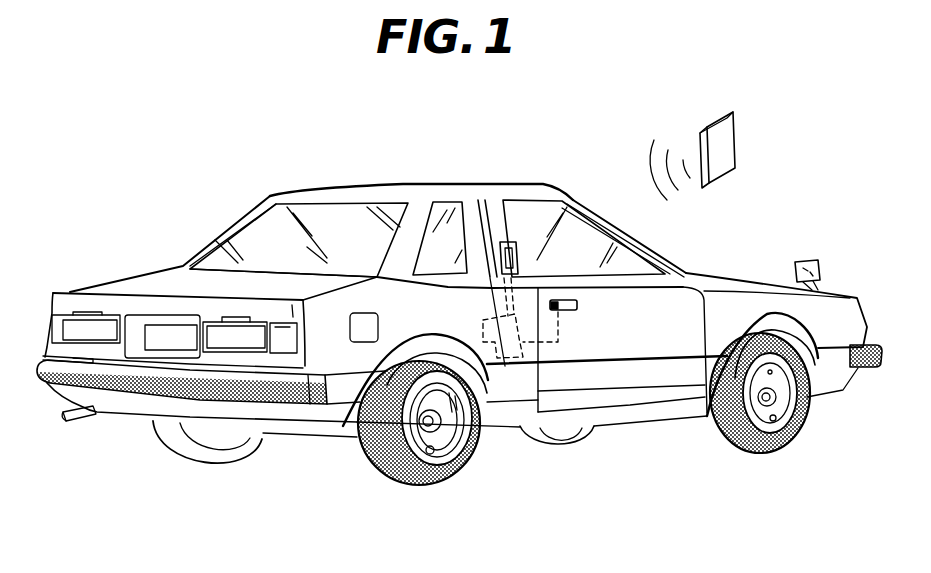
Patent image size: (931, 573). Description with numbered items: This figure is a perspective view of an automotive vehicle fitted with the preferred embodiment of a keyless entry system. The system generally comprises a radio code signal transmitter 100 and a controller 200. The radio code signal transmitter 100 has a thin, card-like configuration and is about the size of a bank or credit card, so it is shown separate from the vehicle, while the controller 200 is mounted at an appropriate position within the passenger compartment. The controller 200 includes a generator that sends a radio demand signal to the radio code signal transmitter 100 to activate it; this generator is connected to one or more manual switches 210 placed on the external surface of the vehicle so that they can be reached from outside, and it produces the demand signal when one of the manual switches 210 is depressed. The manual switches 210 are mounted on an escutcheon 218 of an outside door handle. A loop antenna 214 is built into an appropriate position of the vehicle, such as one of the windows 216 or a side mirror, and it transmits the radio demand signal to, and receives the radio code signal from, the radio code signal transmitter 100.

The radio code signal transmitter 100 is at (735, 148).
The controller 200 is at (483, 320).
The manual switches 210 is at (554, 299).
The loop antenna 214 is at (517, 248).
The windows 216 is at (494, 207).
The escutcheon 218 is at (577, 309).